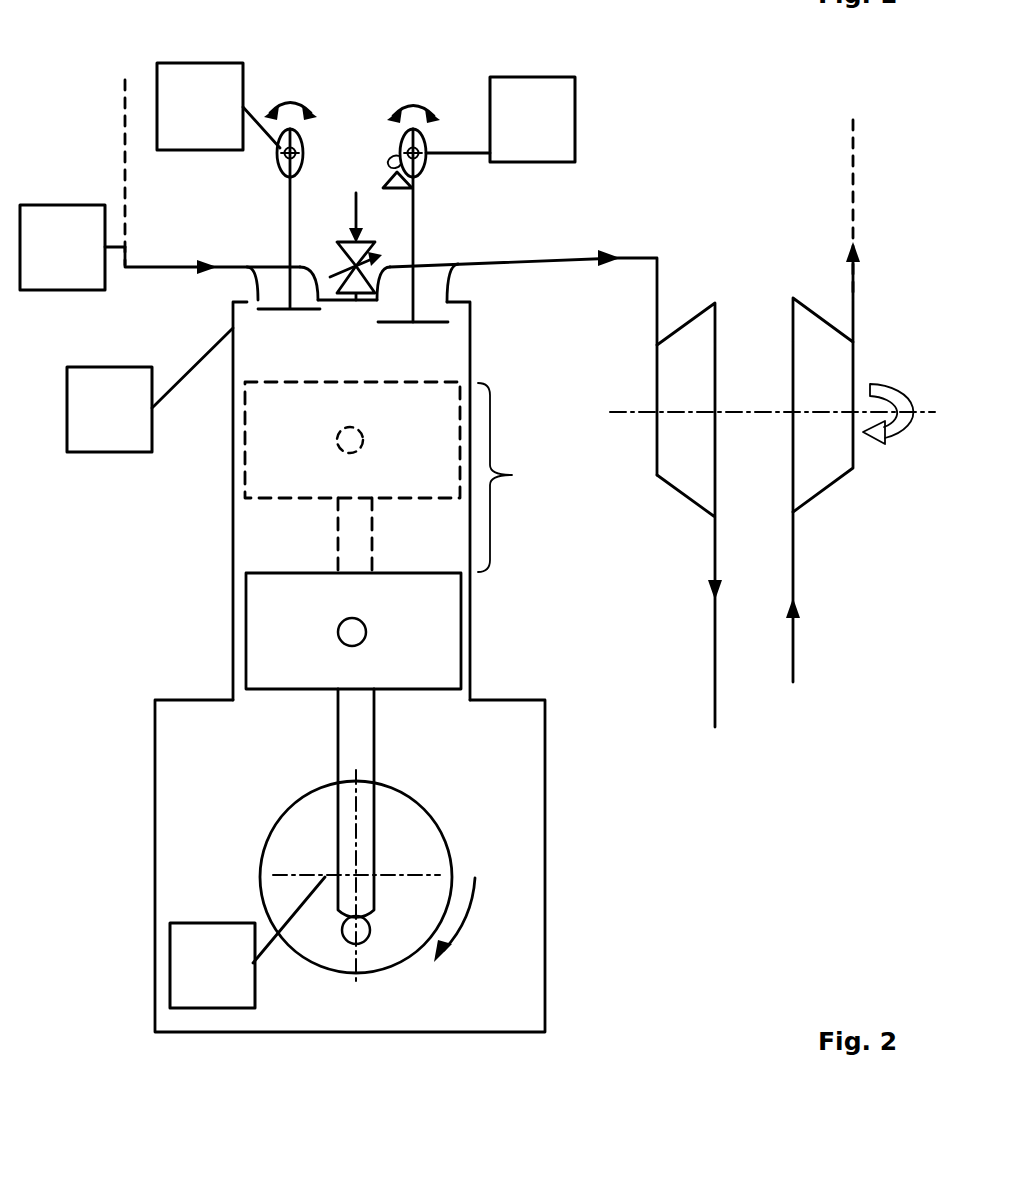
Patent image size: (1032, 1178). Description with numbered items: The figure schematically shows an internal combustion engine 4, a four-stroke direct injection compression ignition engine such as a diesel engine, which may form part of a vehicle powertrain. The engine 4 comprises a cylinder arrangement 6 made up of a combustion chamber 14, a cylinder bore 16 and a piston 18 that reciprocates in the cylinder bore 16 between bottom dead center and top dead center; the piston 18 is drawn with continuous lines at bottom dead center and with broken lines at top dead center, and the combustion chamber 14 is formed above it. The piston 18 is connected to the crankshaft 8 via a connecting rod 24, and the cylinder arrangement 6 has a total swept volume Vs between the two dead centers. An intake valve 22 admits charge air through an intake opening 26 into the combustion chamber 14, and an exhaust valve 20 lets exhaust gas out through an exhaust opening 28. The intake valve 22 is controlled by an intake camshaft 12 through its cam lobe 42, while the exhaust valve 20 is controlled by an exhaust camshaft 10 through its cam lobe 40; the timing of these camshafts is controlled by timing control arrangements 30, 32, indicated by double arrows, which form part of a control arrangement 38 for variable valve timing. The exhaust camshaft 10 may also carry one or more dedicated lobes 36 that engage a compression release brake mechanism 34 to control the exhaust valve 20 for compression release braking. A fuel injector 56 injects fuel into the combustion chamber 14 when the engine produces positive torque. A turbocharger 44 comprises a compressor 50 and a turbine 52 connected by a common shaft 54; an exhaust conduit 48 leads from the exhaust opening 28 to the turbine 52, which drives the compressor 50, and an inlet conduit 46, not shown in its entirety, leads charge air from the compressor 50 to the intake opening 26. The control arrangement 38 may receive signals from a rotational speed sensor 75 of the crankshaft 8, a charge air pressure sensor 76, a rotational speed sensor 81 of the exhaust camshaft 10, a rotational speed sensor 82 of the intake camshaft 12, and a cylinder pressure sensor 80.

The internal combustion engine 4 is at (772, 386).
The cylinder arrangement 6 is at (560, 445).
The crankshaft 8 is at (430, 838).
The exhaust camshaft 10 is at (428, 143).
The intake camshaft 12 is at (303, 143).
The combustion chamber 14 is at (352, 315).
The cylinder bore 16 is at (473, 635).
The piston 18 is at (353, 535).
The exhaust valve 20 is at (415, 217).
The intake valve 22 is at (290, 228).
The connecting rod 24 is at (363, 733).
The intake opening 26 is at (316, 303).
The exhaust opening 28 is at (396, 304).
The timing control arrangement 30 is at (410, 106).
The timing control arrangement 32 is at (297, 103).
The compression release brake mechanism 34 is at (394, 190).
The dedicated lobe 36 is at (397, 158).
The control arrangement 38 is at (93, 51).
The cam lobe 40 is at (427, 165).
The cam lobe 42 is at (283, 146).
The turbocharger 44 is at (732, 272).
The inlet conduit 46 is at (190, 275).
The exhaust conduit 48 is at (582, 264).
The compressor 50 is at (815, 470).
The turbine 52 is at (702, 488).
The common shaft 54 is at (780, 413).
The fuel injector 56 is at (345, 245).
The rotational speed sensor 75 is at (247, 942).
The charge air pressure sensor 76 is at (72, 247).
The cylinder pressure sensor 80 is at (150, 390).
The rotational speed sensor 81 is at (532, 119).
The rotational speed sensor 82 is at (200, 106).